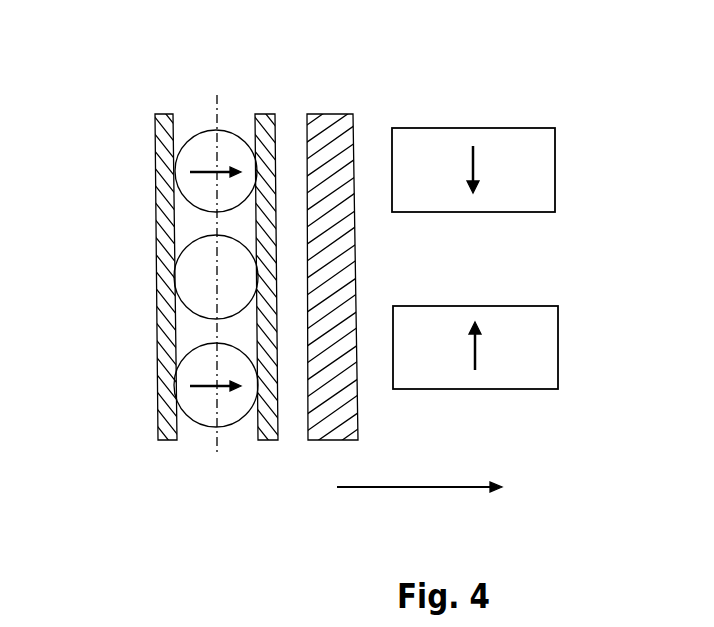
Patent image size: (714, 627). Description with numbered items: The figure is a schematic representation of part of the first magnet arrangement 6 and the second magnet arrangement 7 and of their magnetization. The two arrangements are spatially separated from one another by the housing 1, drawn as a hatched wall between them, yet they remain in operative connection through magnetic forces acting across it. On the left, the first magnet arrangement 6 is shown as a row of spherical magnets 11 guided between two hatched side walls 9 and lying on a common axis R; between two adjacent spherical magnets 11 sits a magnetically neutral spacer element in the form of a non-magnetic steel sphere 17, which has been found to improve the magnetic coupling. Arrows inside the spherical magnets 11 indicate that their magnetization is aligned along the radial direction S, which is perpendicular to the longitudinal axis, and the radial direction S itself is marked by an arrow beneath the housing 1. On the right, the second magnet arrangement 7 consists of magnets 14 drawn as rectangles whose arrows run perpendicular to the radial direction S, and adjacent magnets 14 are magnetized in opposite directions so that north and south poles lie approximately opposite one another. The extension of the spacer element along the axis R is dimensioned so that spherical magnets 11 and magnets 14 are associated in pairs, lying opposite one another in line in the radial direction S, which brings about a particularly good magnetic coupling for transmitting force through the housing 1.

The housing 1 is at (330, 130).
The first magnet arrangement 6 is at (165, 298).
The second magnet arrangement 7 is at (525, 328).
The guide wall 9 is at (163, 428).
The spherical magnet 11 is at (187, 154).
The magnet 14 is at (518, 166).
The non-magnetic steel sphere 17 is at (187, 285).
The axis R is at (218, 110).
The radial direction S is at (431, 487).